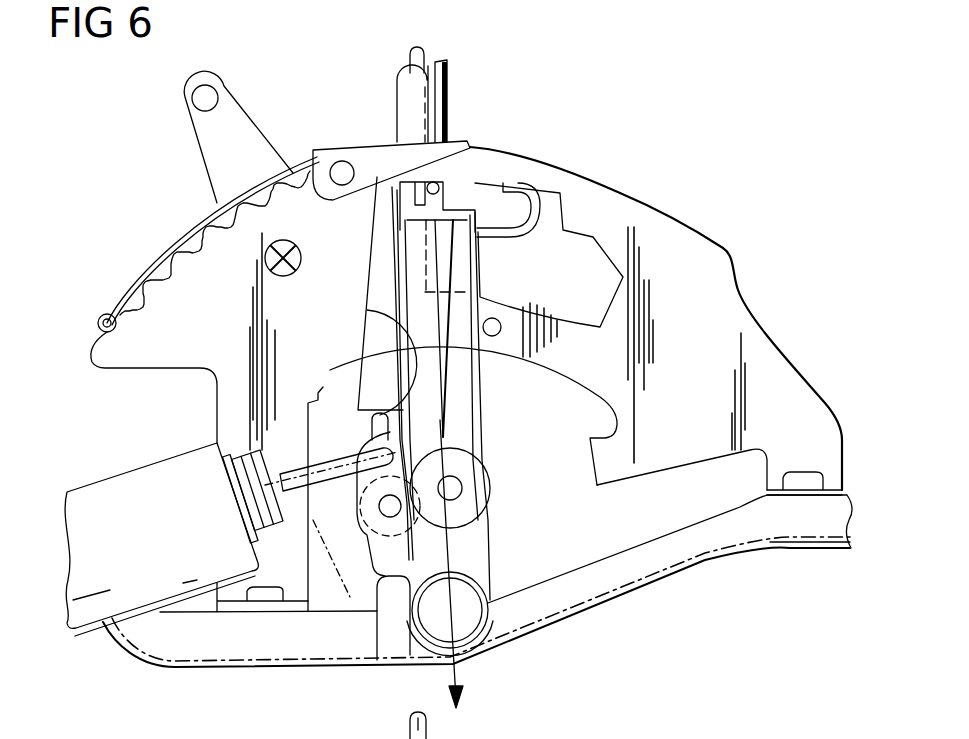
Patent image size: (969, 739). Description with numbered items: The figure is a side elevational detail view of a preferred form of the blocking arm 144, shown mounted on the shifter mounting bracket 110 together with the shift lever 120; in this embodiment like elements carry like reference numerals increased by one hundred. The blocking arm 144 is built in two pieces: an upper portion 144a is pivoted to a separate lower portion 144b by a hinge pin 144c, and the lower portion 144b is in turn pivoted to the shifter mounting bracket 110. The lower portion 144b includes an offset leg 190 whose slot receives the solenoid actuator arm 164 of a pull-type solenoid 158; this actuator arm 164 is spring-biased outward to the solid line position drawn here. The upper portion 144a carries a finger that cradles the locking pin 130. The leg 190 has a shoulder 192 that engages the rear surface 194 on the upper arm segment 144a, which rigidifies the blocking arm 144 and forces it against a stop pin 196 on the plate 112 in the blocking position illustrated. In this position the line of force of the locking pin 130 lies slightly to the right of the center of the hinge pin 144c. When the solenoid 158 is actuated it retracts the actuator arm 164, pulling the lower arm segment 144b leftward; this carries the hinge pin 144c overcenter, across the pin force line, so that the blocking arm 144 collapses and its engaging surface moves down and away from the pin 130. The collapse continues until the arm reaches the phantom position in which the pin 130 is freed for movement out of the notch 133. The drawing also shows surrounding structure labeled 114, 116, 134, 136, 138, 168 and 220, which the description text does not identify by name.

The shifter mounting bracket 110 is at (632, 577).
The plate 112 is at (700, 247).
The arcuate rack 114 is at (203, 245).
The housing 116 is at (578, 234).
The shift lever 120 is at (405, 96).
The locking pin 130 is at (447, 187).
The notch 133 is at (443, 180).
The lever 134 is at (372, 158).
The rack teeth 136 is at (133, 267).
The pivot pin 138 is at (95, 323).
The blocking arm 144 is at (512, 416).
The upper portion 144a is at (478, 270).
The lower portion 144b is at (493, 548).
The hinge pin 144c is at (470, 481).
The pull-type solenoid 158 is at (143, 478).
The solenoid actuator arm 164 is at (327, 470).
The link arm 168 is at (233, 105).
The offset leg 190 is at (393, 560).
The shoulder 192 is at (367, 310).
The rear surface 194 is at (362, 405).
The stop pin 196 is at (493, 336).
The shaft 220 is at (362, 738).